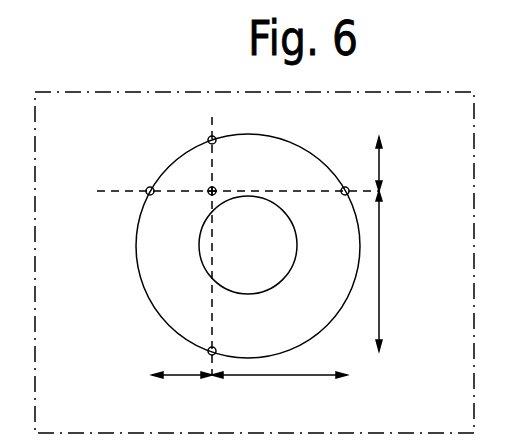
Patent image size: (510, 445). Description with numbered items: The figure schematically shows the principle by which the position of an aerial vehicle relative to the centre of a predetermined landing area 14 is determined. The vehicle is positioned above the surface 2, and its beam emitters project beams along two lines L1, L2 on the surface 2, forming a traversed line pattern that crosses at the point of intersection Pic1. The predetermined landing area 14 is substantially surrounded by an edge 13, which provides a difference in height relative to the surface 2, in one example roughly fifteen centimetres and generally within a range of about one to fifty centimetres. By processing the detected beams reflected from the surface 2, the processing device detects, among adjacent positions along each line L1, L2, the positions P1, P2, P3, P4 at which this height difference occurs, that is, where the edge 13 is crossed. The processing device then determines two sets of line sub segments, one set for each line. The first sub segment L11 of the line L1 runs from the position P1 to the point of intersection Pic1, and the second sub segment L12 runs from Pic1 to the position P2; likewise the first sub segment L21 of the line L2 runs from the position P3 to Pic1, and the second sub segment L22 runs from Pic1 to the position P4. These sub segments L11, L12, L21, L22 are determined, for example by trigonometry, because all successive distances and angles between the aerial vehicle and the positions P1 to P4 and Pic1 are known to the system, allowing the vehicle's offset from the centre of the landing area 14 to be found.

The surface 2 is at (113, 92).
The edge 13 is at (144, 280).
The predetermined landing area 14 is at (297, 248).
The line L1 is at (212, 117).
The line L2 is at (97, 191).
The position P1 is at (215, 136).
The position P2 is at (212, 347).
The position P3 is at (152, 194).
The position P4 is at (345, 195).
The point of intersection Pic1 is at (289, 176).
The first sub segment of line L1 L11 is at (381, 163).
The second sub segment of line L1 L12 is at (381, 263).
The first sub segment of line L2 L21 is at (181, 377).
The second sub segment of line L2 L22 is at (281, 376).